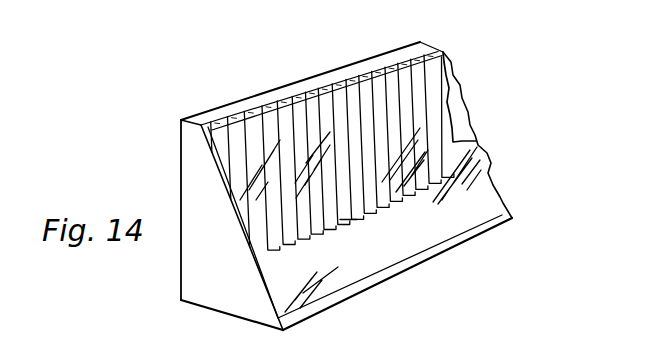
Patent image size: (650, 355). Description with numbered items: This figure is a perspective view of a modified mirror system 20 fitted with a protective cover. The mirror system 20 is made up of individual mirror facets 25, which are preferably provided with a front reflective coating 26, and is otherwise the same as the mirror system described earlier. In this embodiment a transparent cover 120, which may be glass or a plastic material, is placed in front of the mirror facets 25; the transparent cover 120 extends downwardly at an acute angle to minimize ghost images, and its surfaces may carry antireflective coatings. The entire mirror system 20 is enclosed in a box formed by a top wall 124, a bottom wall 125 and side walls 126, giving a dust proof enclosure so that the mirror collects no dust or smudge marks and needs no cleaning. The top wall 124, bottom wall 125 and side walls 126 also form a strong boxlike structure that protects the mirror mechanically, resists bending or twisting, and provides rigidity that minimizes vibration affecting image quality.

The mirror system 20 is at (468, 66).
The mirror facets 25 is at (366, 217).
The front reflective coating 26 is at (347, 226).
The transparent cover 120 is at (470, 104).
The top wall 124 is at (247, 100).
The bottom wall 125 is at (500, 190).
The side walls 126 is at (181, 164).